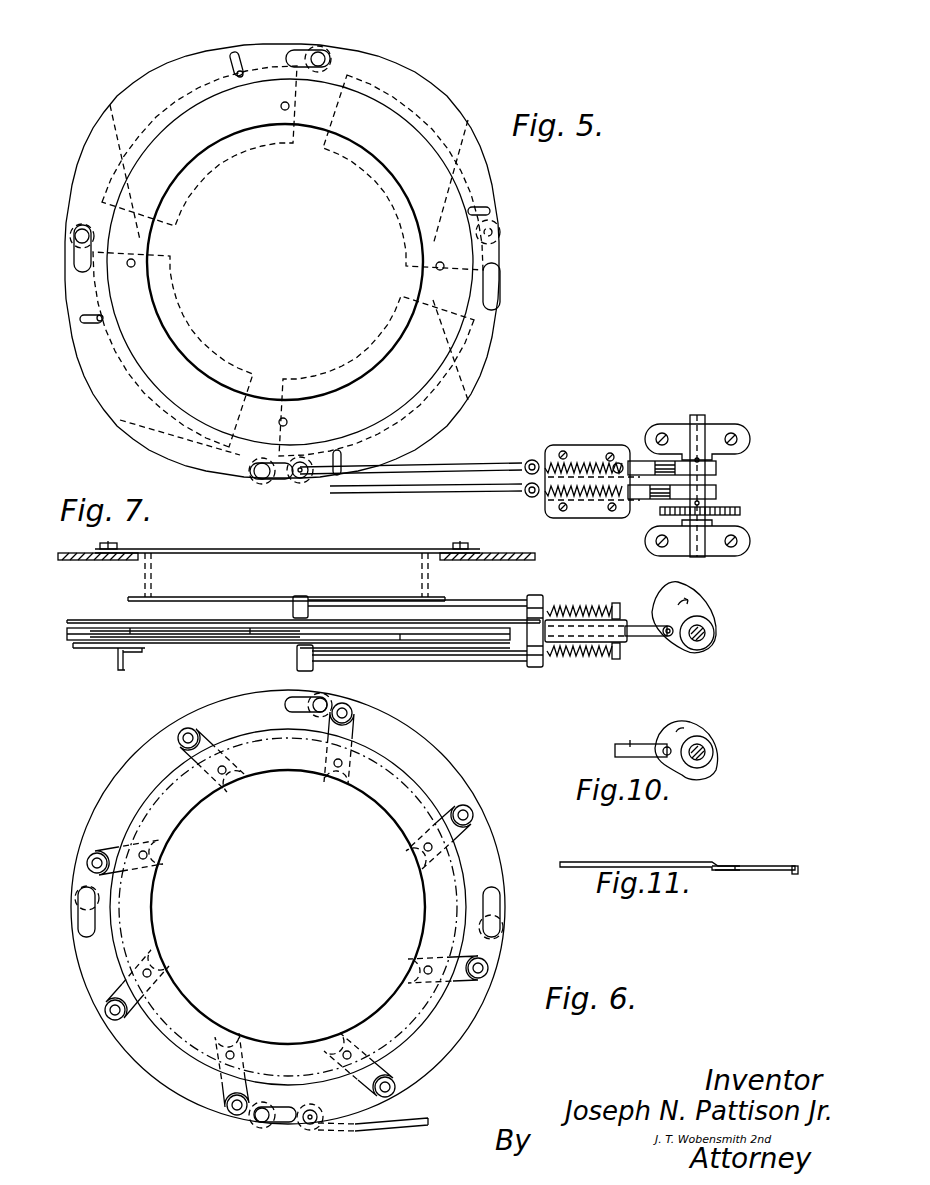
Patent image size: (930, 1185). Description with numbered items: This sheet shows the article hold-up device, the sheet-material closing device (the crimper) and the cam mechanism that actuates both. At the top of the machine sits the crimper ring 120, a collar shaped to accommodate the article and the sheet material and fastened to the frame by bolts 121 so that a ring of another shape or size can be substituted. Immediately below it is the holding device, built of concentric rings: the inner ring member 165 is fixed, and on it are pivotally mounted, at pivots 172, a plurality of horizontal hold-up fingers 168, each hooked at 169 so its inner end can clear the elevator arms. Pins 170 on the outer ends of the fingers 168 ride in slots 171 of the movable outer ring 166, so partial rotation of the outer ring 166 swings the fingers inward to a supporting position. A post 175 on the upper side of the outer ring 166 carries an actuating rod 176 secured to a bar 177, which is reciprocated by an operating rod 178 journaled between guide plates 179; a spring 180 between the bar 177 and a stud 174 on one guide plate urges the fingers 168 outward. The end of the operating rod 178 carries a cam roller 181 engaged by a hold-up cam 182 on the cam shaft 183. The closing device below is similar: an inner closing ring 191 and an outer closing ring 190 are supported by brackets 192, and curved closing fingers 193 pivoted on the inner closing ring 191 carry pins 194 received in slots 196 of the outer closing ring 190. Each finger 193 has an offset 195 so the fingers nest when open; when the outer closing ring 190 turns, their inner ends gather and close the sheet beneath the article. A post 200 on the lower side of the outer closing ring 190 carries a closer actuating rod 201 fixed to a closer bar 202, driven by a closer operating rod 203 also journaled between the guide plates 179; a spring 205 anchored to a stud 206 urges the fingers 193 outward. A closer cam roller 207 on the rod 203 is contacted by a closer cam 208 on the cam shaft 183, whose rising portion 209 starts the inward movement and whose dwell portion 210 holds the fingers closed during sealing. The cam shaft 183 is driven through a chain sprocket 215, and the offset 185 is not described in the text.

In FIG. 7, the crimper ring 120 is at (150, 572).
In FIG. 7, the bolts 121 is at (118, 546).
In FIG. 5, the inner ring member 165 is at (398, 122).
In FIG. 5, the outer ring 166 is at (487, 186).
In FIG. 7, the outer ring 166 is at (78, 620).
In FIG. 5, the hold-up fingers 168 is at (127, 97).
In FIG. 5, the hook 169 is at (222, 145).
In FIG. 5, the pins 170 is at (237, 70).
In FIG. 5, the slots 171 is at (230, 62).
In FIG. 5, the pivot 172 is at (287, 110).
In FIG. 5, the stud 174 is at (605, 455).
In FIG. 7, the stud 174 is at (615, 625).
In FIG. 5, the post 175 is at (303, 477).
In FIG. 7, the post 175 is at (302, 596).
In FIG. 5, the actuating rod 176 is at (470, 464).
In FIG. 7, the actuating rod 176 is at (476, 600).
In FIG. 5, the bar 177 is at (530, 461).
In FIG. 7, the bar 177 is at (542, 598).
In FIG. 5, the operating rod 178 is at (632, 450).
In FIG. 5, the guide plates 179 is at (618, 462).
In FIG. 7, the guide plates 179 is at (640, 637).
In FIG. 5, the spring 180 is at (580, 463).
In FIG. 7, the spring 180 is at (590, 606).
In FIG. 5, the cam roller 181 is at (640, 455).
In FIG. 10, the cam roller 181 is at (630, 744).
In FIG. 5, the hold-up cam 182 is at (716, 470).
In FIG. 10, the hold-up cam 182 is at (700, 736).
In FIG. 5, the cam shaft 183 is at (705, 418).
In FIG. 7, the cam shaft 183 is at (705, 638).
In FIG. 10, the cam shaft 183 is at (700, 758).
In FIG. 11, the offset portion 185 is at (730, 865).
In FIG. 6, the outer closing ring 190 is at (455, 783).
In FIG. 6, the inner closing ring 191 is at (440, 828).
In FIG. 7, the brackets 192 is at (126, 668).
In FIG. 11, the closing fingers 193 is at (605, 862).
In FIG. 6, the closing fingers 193 is at (205, 735).
In FIG. 11, the pins 194 is at (798, 871).
In FIG. 6, the pins 194 is at (183, 738).
In FIG. 11, the offset 195 is at (738, 871).
In FIG. 6, the offset 195 is at (225, 774).
In FIG. 6, the slots 196 is at (186, 728).
In FIG. 7, the post 200 is at (313, 665).
In FIG. 6, the post 200 is at (318, 1125).
In FIG. 5, the closer actuating rod 201 is at (415, 490).
In FIG. 7, the closer actuating rod 201 is at (388, 661).
In FIG. 6, the closer actuating rod 201 is at (420, 1127).
In FIG. 5, the closer bar 202 is at (532, 498).
In FIG. 7, the closer bar 202 is at (548, 664).
In FIG. 5, the closer operating rod 203 is at (648, 500).
In FIG. 7, the closer operating rod 203 is at (690, 593).
In FIG. 5, the spring 205 is at (560, 497).
In FIG. 7, the spring 205 is at (575, 657).
In FIG. 7, the stud 206 is at (620, 658).
In FIG. 7, the closer cam roller 207 is at (670, 637).
In FIG. 5, the closer cam 208 is at (716, 492).
In FIG. 7, the closer cam 208 is at (718, 625).
In FIG. 7, the rising portion 209 is at (713, 607).
In FIG. 7, the dwell portion 210 is at (672, 590).
In FIG. 5, the chain sprocket 215 is at (740, 511).